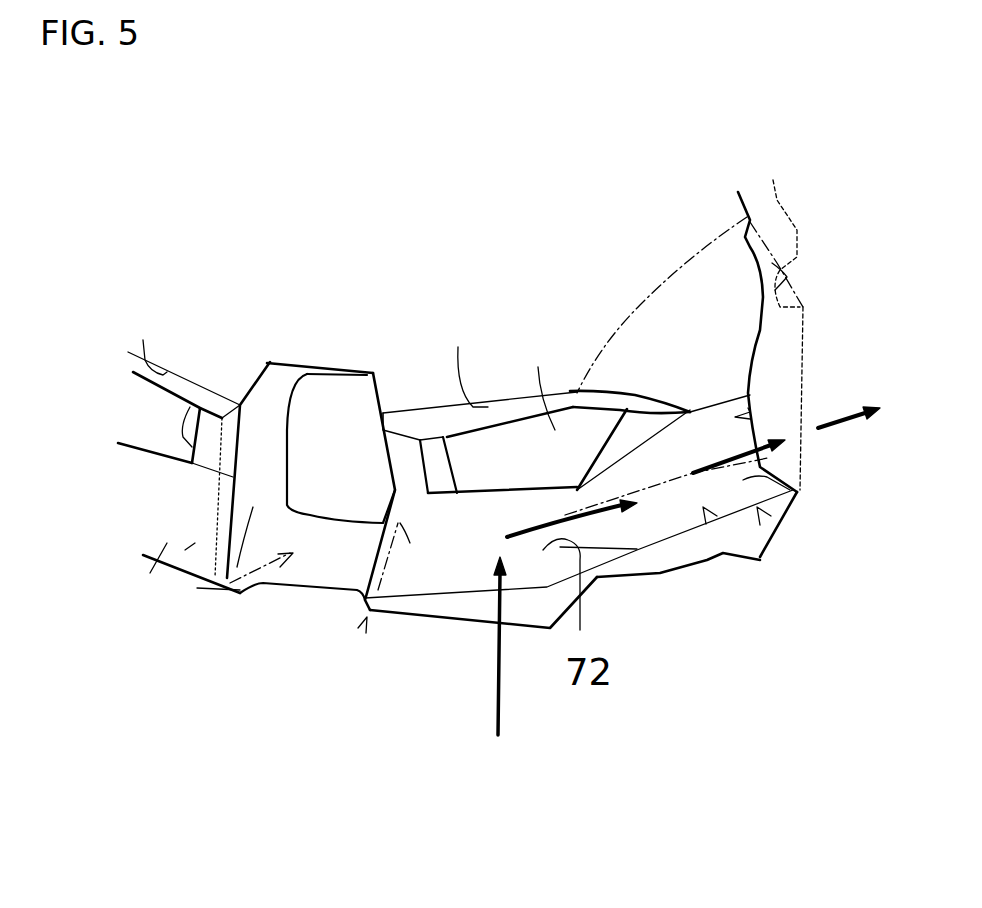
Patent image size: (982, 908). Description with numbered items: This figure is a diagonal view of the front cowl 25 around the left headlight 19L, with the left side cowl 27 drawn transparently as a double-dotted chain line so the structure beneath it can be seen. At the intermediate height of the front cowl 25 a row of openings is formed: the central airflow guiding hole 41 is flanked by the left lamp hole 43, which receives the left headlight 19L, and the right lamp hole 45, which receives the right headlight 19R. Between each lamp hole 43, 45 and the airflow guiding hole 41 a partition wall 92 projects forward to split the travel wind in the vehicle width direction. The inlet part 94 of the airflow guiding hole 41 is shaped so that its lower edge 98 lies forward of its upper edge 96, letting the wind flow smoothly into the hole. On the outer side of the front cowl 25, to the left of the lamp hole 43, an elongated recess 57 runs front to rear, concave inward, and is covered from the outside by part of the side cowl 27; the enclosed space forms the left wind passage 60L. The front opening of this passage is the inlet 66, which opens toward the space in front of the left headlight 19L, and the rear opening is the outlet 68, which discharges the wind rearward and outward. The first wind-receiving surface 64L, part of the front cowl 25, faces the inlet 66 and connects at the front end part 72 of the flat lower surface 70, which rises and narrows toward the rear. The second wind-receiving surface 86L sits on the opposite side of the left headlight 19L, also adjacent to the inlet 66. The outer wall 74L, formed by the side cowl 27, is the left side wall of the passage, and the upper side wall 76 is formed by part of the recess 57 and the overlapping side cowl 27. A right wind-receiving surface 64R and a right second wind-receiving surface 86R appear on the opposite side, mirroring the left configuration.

The right headlight 19R is at (148, 450).
The left headlight 19L is at (538, 367).
The front cowl 25 is at (367, 617).
The side cowl 27 is at (778, 500).
The airflow guiding hole 41 is at (290, 433).
The left lamp hole 43 is at (460, 447).
The right lamp hole 45 is at (190, 407).
The recess 57 is at (735, 417).
The left wind passage 60L is at (705, 510).
The right wind-receiving surface 64R is at (150, 573).
The first wind-receiving surface 64L is at (450, 577).
The inlet 66 is at (667, 460).
The outlet 68 is at (780, 290).
The lower surface 70 is at (760, 509).
The front end part 72 is at (580, 630).
The outer wall 74L is at (800, 452).
The upper side wall 76 is at (640, 550).
The right second wind-receiving surface 86R is at (143, 340).
The second wind-receiving surface 86L is at (458, 347).
The partition wall 92 is at (185, 550).
The inlet part 94 is at (237, 567).
The upper edge 96 is at (320, 373).
The lower edge 98 is at (313, 587).